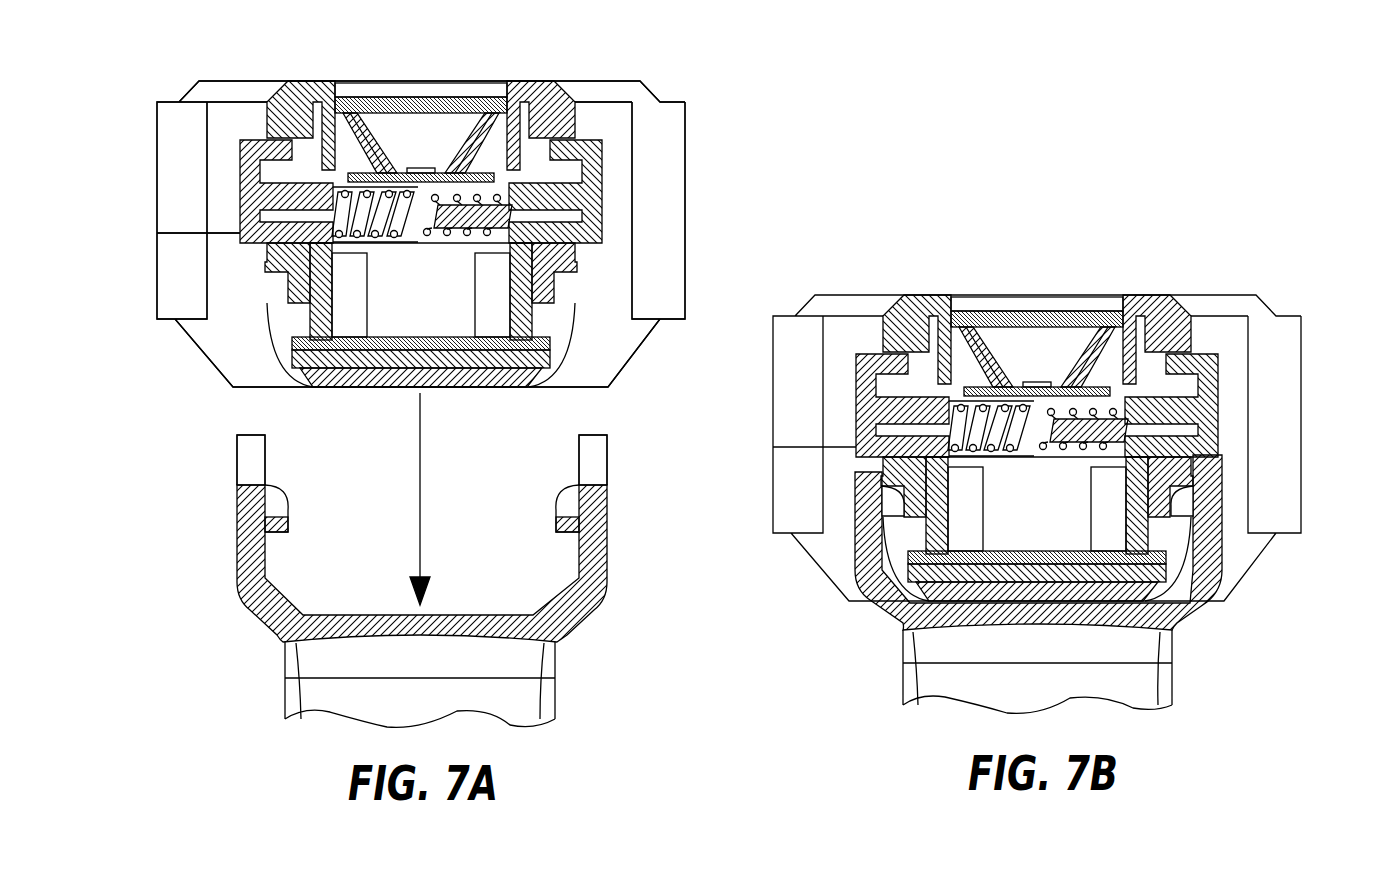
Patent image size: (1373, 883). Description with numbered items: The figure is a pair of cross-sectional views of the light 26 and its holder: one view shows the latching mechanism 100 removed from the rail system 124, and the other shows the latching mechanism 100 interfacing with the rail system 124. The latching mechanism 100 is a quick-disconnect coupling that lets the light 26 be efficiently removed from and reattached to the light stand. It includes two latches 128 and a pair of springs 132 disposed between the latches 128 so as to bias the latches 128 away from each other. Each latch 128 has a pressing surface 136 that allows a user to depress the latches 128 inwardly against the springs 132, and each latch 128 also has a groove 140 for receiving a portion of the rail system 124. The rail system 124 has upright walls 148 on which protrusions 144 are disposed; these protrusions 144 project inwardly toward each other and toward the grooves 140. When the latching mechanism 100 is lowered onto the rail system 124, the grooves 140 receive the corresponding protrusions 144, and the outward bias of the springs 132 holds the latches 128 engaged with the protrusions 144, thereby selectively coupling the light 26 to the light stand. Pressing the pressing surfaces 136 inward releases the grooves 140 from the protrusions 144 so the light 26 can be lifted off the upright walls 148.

In FIG. 7A, the light 26 is at (736, 101).
In FIG. 7A, the latching mechanism 100 is at (124, 243).
In FIG. 7A, the rail system 124 is at (226, 539).
In FIG. 7A, the latches 128 is at (251, 137).
In FIG. 7B, the latches 128 is at (868, 352).
In FIG. 7A, the springs 132 is at (602, 205).
In FIG. 7B, the springs 132 is at (1095, 407).
In FIG. 7A, the pressing surface 136 is at (237, 198).
In FIG. 7B, the pressing surface 136 is at (902, 405).
In FIG. 7A, the groove 140 is at (560, 284).
In FIG. 7B, the groove 140 is at (1037, 487).
In FIG. 7A, the protrusions 144 is at (289, 510).
In FIG. 7B, the protrusions 144 is at (1173, 503).
In FIG. 7A, the upright walls 148 is at (596, 440).
In FIG. 7B, the upright walls 148 is at (855, 492).